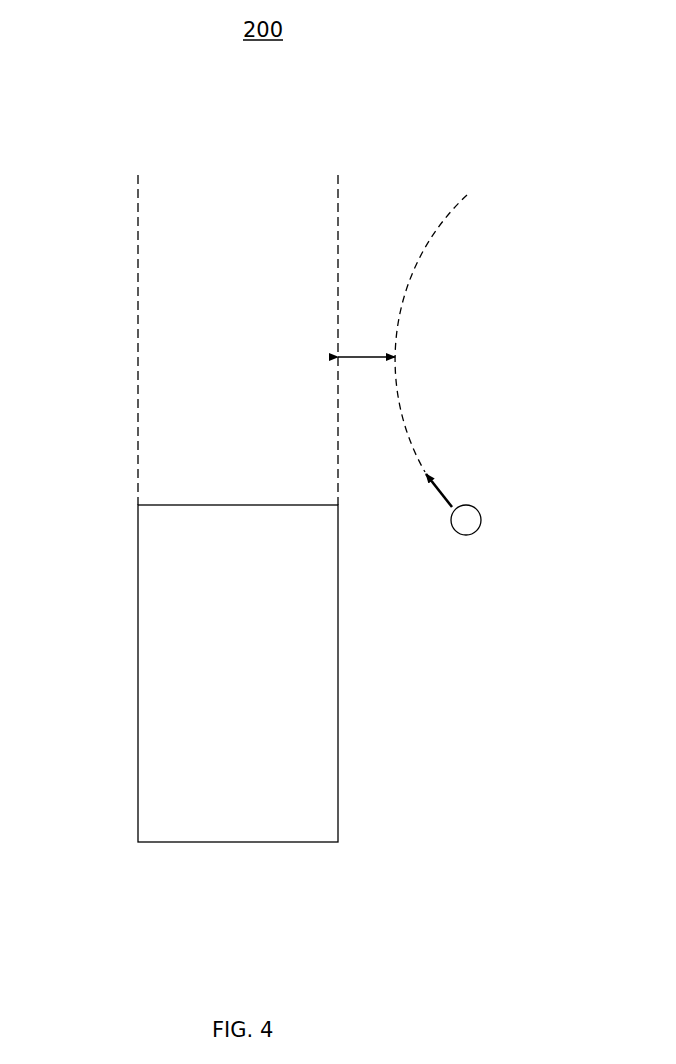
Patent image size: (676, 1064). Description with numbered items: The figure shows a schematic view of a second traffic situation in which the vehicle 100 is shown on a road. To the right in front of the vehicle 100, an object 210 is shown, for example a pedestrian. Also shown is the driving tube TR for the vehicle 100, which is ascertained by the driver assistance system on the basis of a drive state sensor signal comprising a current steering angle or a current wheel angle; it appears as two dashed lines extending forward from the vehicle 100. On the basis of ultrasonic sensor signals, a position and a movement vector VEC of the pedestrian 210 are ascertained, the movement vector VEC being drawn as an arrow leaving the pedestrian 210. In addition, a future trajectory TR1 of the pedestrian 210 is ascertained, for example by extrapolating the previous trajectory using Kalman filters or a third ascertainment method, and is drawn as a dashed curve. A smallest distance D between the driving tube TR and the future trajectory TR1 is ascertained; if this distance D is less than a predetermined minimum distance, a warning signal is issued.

The vehicle 100 is at (233, 842).
The driving tube TR is at (136, 357).
The distance D is at (370, 355).
The future trajectory TR1 is at (410, 282).
The movement vector VEC is at (432, 484).
The object 210 is at (481, 520).